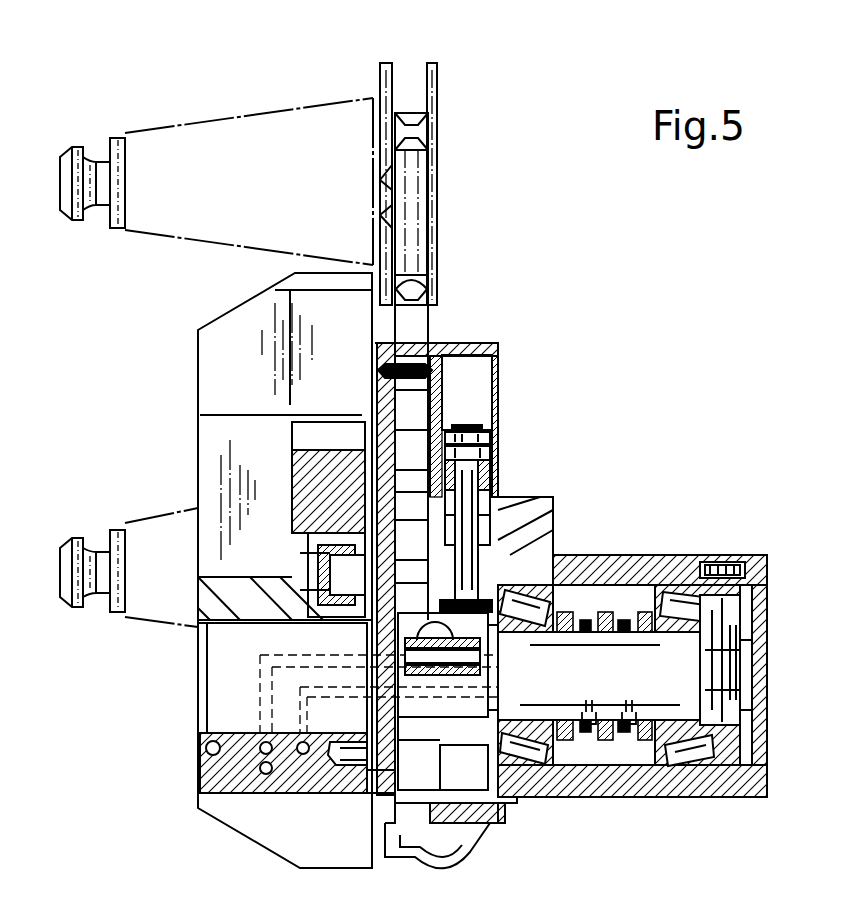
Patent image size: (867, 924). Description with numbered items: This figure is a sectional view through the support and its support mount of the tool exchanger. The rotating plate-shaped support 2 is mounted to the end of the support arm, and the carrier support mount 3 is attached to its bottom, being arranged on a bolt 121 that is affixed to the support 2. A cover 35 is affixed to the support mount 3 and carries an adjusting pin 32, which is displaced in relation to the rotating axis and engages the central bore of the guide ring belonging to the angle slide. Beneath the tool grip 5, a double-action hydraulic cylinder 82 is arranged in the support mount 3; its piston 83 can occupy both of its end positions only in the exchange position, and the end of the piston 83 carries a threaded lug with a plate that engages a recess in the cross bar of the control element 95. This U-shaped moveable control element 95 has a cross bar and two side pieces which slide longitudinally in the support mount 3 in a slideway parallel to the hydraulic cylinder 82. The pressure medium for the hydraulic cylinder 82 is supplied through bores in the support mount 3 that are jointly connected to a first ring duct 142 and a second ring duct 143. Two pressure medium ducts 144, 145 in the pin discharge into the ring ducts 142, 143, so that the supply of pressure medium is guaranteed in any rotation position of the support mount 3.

The support 2 is at (222, 363).
The support mount 3 is at (553, 790).
The tool grip 5 is at (416, 318).
The adjusting pin 32 is at (345, 600).
The cover 35 is at (375, 403).
The hydraulic cylinder 82 is at (480, 384).
The piston 83 is at (490, 452).
The control element 95 is at (466, 558).
The bolt 121 is at (215, 685).
The first ring duct 142 is at (583, 612).
The second ring duct 143 is at (632, 612).
The pressure medium duct 144 is at (630, 724).
The pressure medium duct 145 is at (588, 724).